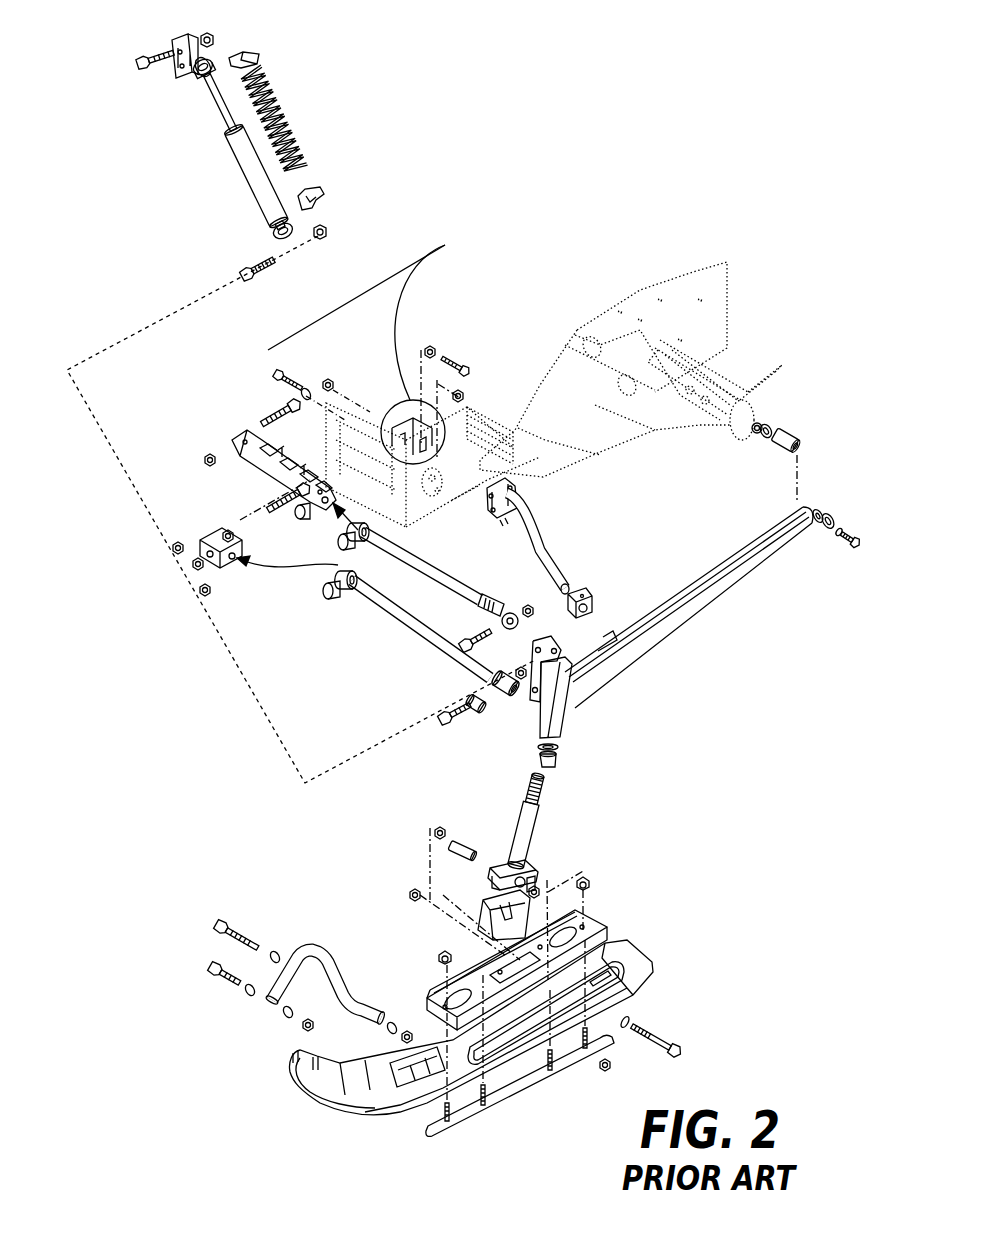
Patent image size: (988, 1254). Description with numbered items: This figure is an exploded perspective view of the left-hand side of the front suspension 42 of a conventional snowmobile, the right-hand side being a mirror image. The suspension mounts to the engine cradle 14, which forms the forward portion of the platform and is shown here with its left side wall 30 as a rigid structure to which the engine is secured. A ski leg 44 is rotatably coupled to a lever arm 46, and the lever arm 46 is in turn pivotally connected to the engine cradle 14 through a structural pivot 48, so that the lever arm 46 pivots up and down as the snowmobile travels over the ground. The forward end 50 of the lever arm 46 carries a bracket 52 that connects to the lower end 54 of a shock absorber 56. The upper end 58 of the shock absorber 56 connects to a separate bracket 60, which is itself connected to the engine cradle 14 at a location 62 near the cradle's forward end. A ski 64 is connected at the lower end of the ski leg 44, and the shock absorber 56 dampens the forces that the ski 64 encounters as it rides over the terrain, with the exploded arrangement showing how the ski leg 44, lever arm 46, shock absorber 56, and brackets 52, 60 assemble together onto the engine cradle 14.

The engine cradle 14 is at (514, 400).
The left side wall 30 is at (620, 315).
The front suspension 42 is at (832, 424).
The ski leg 44 is at (533, 812).
The lever arm 46 is at (650, 650).
The structural pivot 48 is at (722, 390).
The forward end 50 is at (545, 716).
The bracket 52 is at (560, 635).
The lower end 54 is at (275, 236).
The shock absorber 56 is at (240, 172).
The upper end 58 is at (213, 60).
The bracket 60 is at (175, 72).
The location 62 is at (413, 440).
The ski 64 is at (642, 948).